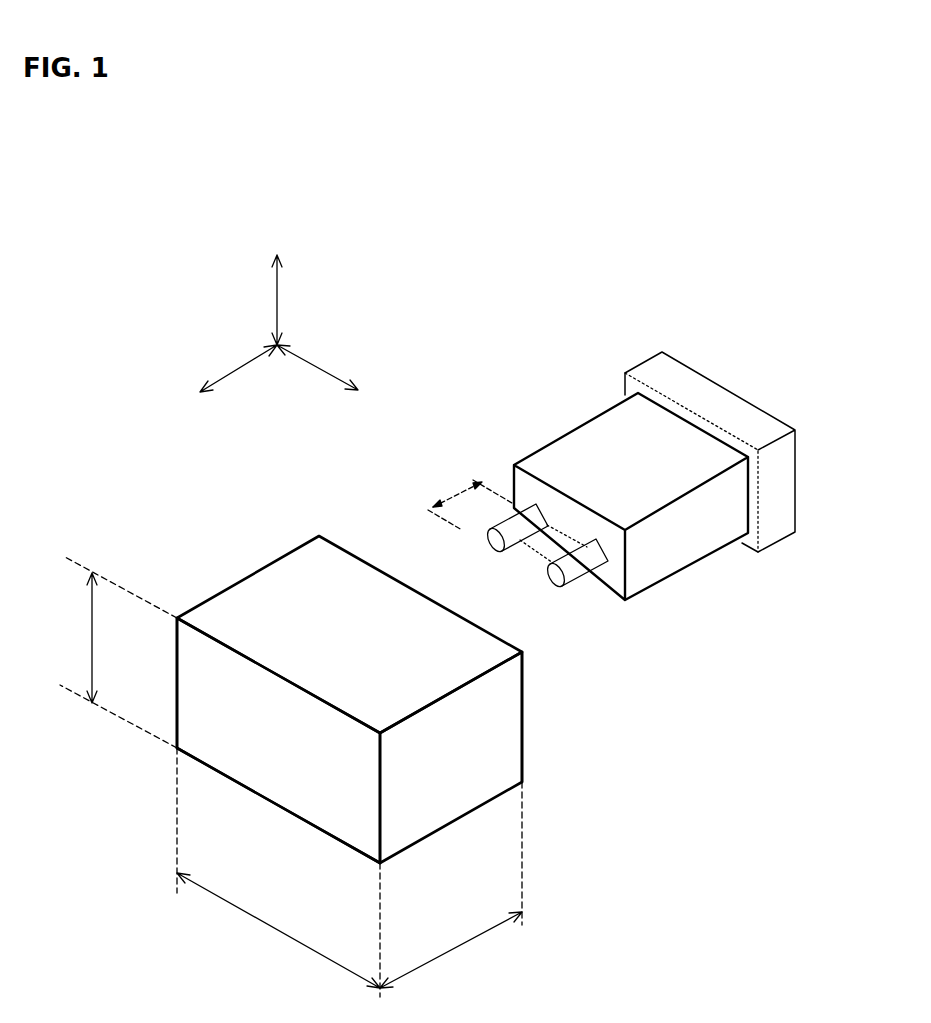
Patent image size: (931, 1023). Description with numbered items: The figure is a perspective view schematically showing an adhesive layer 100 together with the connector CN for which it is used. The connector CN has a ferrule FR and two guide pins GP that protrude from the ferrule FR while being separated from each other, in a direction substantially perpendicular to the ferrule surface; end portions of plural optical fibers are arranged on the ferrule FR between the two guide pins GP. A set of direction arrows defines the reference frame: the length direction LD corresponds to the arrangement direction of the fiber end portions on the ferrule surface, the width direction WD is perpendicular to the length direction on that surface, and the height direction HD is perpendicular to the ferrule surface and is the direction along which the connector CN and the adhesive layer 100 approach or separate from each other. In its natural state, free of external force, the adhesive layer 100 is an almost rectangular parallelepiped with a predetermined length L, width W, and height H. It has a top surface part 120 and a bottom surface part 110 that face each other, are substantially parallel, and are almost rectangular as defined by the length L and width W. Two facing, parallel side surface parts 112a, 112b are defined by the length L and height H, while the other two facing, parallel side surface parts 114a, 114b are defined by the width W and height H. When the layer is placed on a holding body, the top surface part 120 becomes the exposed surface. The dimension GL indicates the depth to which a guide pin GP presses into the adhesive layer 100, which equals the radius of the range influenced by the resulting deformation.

The adhesive layer 100 is at (285, 524).
The bottom surface part 110 is at (275, 755).
The side surface part 112a is at (273, 628).
The side surface part 112b is at (278, 837).
The side surface part 114a is at (442, 803).
The side surface part 114b is at (156, 677).
The top surface part 120 is at (548, 705).
The connector CN is at (562, 377).
The ferrule FR is at (650, 573).
The guide pin GP is at (577, 632).
The pressed length GL is at (453, 497).
The width direction WD is at (257, 300).
The height direction HD is at (238, 372).
The length direction LD is at (317, 372).
The width W is at (118, 652).
The length L is at (278, 872).
The height H is at (451, 889).